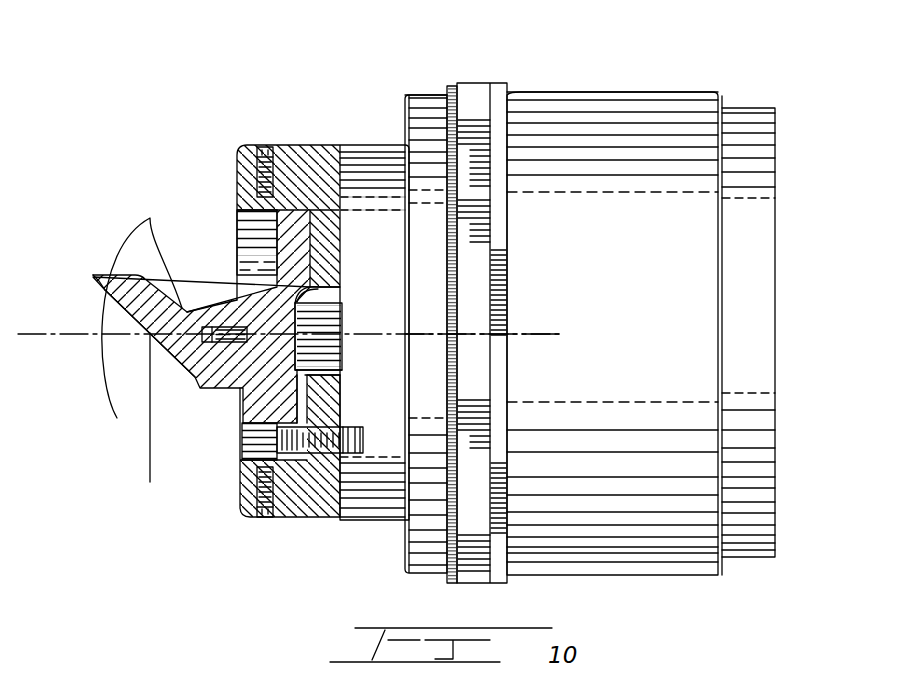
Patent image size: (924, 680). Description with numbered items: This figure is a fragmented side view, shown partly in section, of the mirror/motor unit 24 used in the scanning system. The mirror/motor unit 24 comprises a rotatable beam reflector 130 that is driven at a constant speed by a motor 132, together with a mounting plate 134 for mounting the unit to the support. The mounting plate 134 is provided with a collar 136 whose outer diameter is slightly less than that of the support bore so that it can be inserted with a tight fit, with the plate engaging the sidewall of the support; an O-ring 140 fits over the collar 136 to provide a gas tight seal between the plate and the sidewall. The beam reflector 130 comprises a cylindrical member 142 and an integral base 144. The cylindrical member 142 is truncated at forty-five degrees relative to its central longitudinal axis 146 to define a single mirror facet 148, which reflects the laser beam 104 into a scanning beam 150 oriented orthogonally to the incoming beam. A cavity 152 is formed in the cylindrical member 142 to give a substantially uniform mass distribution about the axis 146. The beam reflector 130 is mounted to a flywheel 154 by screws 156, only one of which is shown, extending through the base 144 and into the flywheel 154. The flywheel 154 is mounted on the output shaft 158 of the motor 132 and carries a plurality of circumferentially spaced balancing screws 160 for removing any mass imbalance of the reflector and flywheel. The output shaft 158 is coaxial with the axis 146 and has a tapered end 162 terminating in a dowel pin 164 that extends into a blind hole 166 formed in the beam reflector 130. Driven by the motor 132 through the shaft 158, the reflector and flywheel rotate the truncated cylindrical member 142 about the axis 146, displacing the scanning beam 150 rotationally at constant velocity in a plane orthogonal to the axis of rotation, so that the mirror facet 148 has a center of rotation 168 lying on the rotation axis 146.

The mirror/motor unit 24 is at (632, 77).
The laser beam 104 is at (52, 333).
The beam reflector 130 is at (184, 366).
The motor 132 is at (697, 240).
The mounting plate 134 is at (485, 108).
The collar 136 is at (426, 107).
The O-ring 140 is at (452, 92).
The cylindrical member 142 is at (235, 378).
The integral base 144 is at (262, 410).
The central longitudinal axis 146 is at (560, 334).
The mirror facet 148 is at (97, 279).
The scanning beam 150 is at (148, 460).
The cavity 152 is at (174, 286).
The flywheel 154 is at (292, 160).
The screws 156 is at (308, 432).
The output shaft 158 is at (328, 320).
The balancing screws 160 is at (262, 147).
The tapered end 162 is at (298, 300).
The dowel pin 164 is at (318, 352).
The blind hole 166 is at (210, 327).
The center of rotation 168 is at (150, 335).